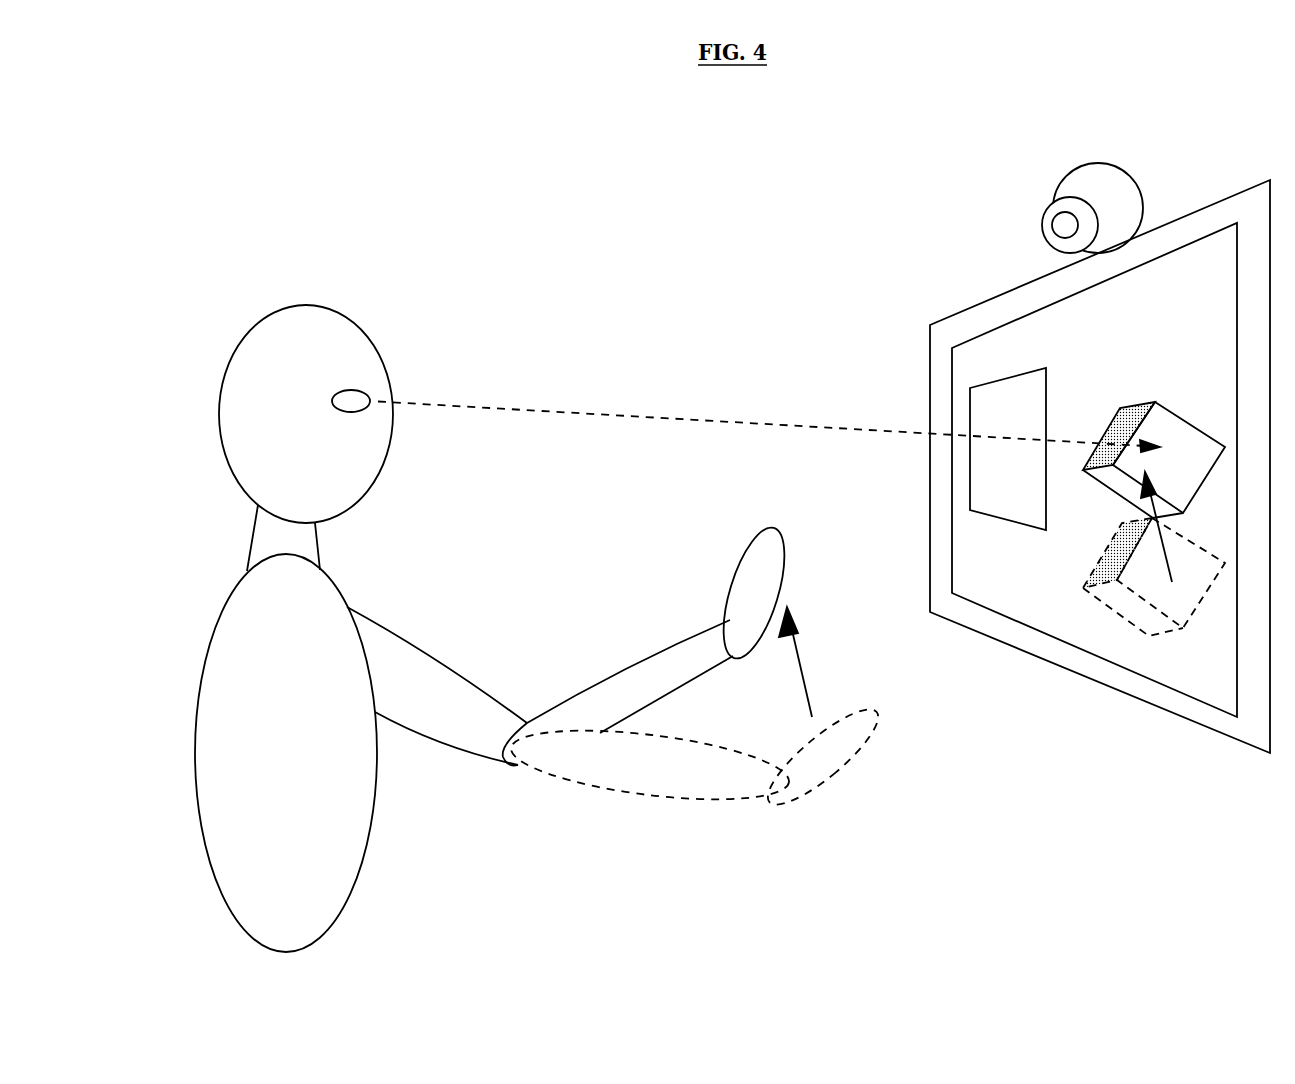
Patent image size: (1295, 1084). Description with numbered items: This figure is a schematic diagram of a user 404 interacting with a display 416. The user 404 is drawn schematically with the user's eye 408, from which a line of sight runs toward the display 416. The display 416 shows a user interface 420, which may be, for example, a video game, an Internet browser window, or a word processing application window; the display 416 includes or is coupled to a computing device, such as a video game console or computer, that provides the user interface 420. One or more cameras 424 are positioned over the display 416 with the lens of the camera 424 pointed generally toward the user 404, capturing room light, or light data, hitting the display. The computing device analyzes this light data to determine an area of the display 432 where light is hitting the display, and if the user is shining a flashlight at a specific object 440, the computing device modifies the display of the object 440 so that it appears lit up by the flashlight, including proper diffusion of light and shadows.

The user 404 is at (306, 793).
The user's eye 408 is at (362, 442).
The display 416 is at (1095, 711).
The user interface 420 is at (1135, 347).
The camera 424 is at (1009, 207).
The area of the display 432 is at (1024, 501).
The object 440 is at (1194, 471).